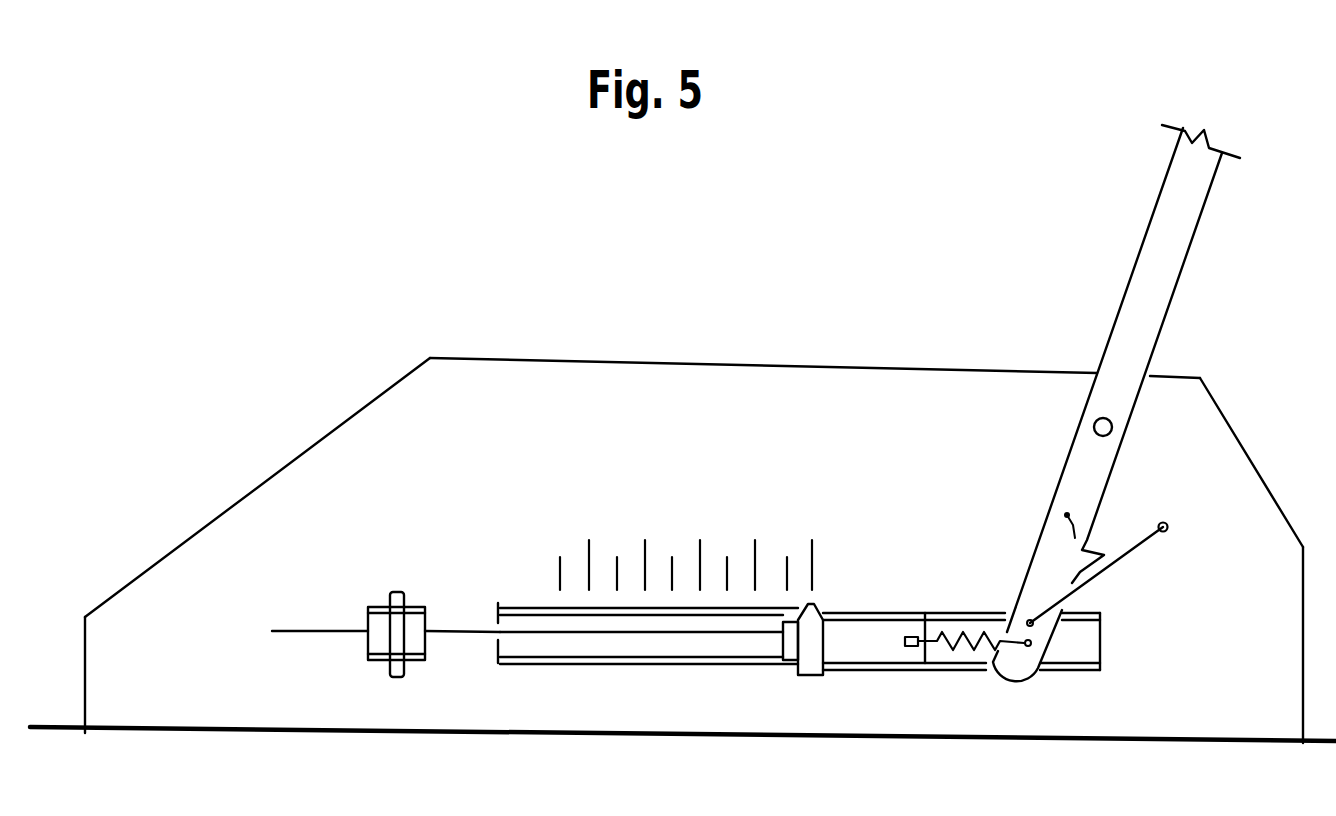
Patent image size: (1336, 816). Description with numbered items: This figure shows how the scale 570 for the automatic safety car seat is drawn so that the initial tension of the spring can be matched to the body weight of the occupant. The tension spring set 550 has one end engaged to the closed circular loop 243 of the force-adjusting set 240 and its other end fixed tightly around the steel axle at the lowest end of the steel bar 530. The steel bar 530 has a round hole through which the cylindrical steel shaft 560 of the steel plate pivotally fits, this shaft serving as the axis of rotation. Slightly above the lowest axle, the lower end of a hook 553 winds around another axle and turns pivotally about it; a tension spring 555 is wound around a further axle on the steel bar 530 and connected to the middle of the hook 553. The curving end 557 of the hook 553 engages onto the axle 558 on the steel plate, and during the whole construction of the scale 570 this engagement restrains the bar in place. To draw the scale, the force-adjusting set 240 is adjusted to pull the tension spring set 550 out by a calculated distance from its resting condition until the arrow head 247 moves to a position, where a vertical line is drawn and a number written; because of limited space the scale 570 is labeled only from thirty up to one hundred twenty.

The force-adjusting set 240 is at (490, 579).
The closed circular loop 243 is at (903, 643).
The arrow head 247 is at (815, 602).
The steel bar 530 is at (1157, 252).
The tension spring set 550 is at (958, 632).
The hook 553 is at (1095, 573).
The tension spring 555 is at (1087, 528).
The curving end 557 is at (1165, 520).
The axle 558 is at (1161, 535).
The cylindrical steel shaft 560 is at (1093, 427).
The scale 570 is at (620, 502).